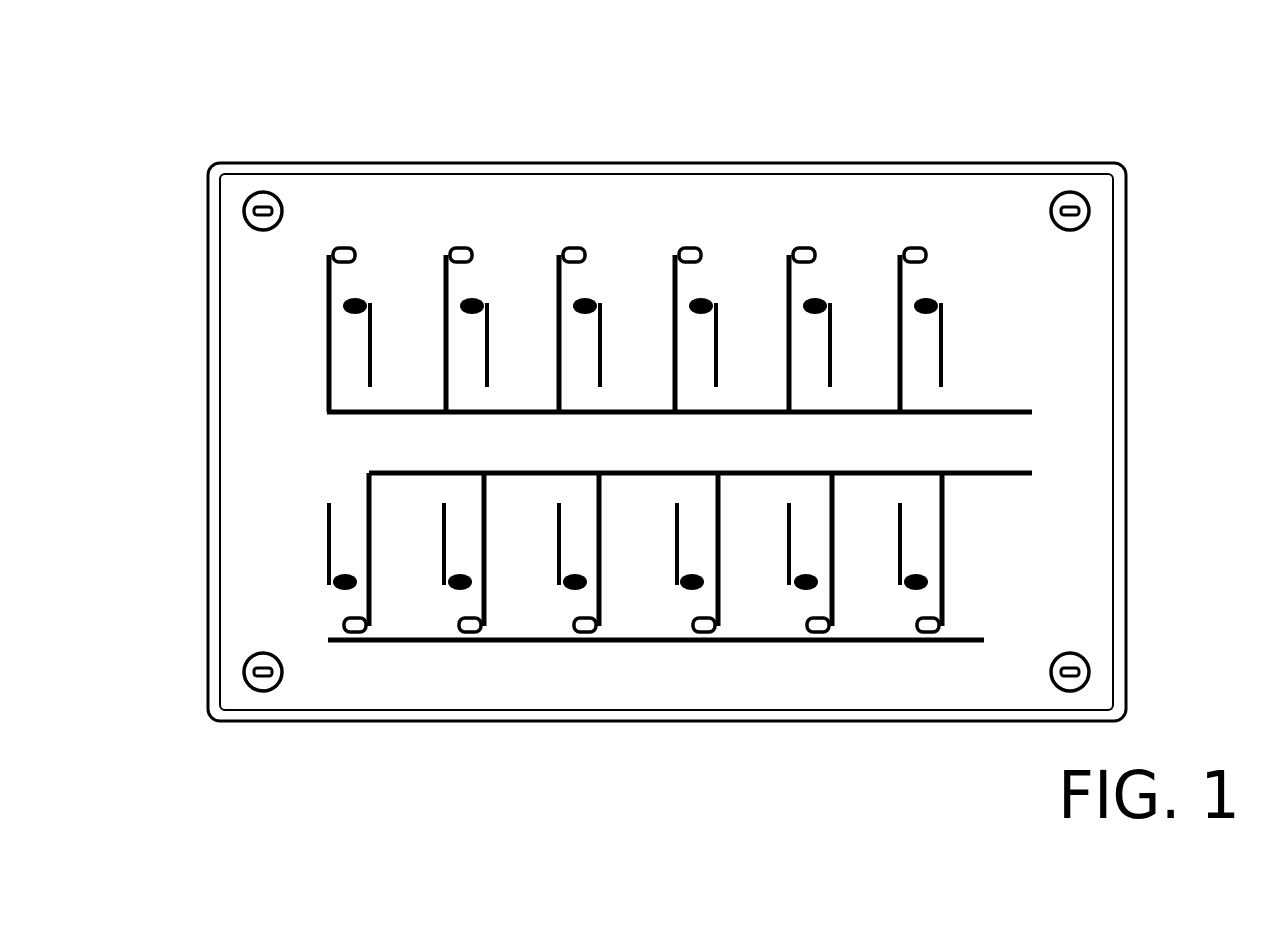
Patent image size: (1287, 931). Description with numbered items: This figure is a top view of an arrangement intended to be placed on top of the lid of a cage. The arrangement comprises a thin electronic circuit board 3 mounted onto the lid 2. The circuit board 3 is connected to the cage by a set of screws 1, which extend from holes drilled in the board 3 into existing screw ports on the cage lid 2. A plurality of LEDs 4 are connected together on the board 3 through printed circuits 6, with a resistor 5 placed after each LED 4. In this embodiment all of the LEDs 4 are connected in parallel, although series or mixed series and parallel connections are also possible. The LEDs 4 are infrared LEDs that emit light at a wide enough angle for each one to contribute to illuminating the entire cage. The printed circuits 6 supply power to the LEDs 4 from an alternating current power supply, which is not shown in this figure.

The screws 1 is at (245, 185).
The lid 2 is at (423, 160).
The electronic circuit board 3 is at (575, 200).
The LEDs 4 is at (695, 237).
The resistor 5 is at (818, 282).
The printed circuits 6 is at (1022, 460).